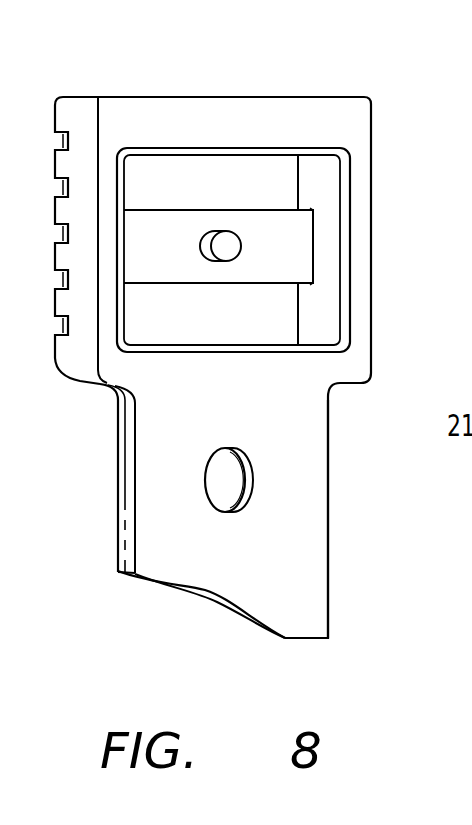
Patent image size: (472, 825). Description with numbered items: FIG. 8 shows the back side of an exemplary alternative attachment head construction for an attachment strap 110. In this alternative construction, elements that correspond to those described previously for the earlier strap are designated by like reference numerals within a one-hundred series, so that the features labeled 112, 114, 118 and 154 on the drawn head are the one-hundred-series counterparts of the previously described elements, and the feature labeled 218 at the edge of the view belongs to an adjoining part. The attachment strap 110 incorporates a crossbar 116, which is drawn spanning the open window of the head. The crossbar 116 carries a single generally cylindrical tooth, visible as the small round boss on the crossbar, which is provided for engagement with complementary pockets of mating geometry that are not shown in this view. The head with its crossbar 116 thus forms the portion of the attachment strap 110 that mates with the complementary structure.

The attachment strap 110 is at (285, 88).
The upper edge of bracket plate 112 is at (180, 97).
The support arm 114 is at (232, 248).
The crossbar 116 is at (158, 283).
The serrated flange 118 is at (76, 173).
The aperture 154 is at (245, 477).
The adjacent member 218 is at (471, 160).